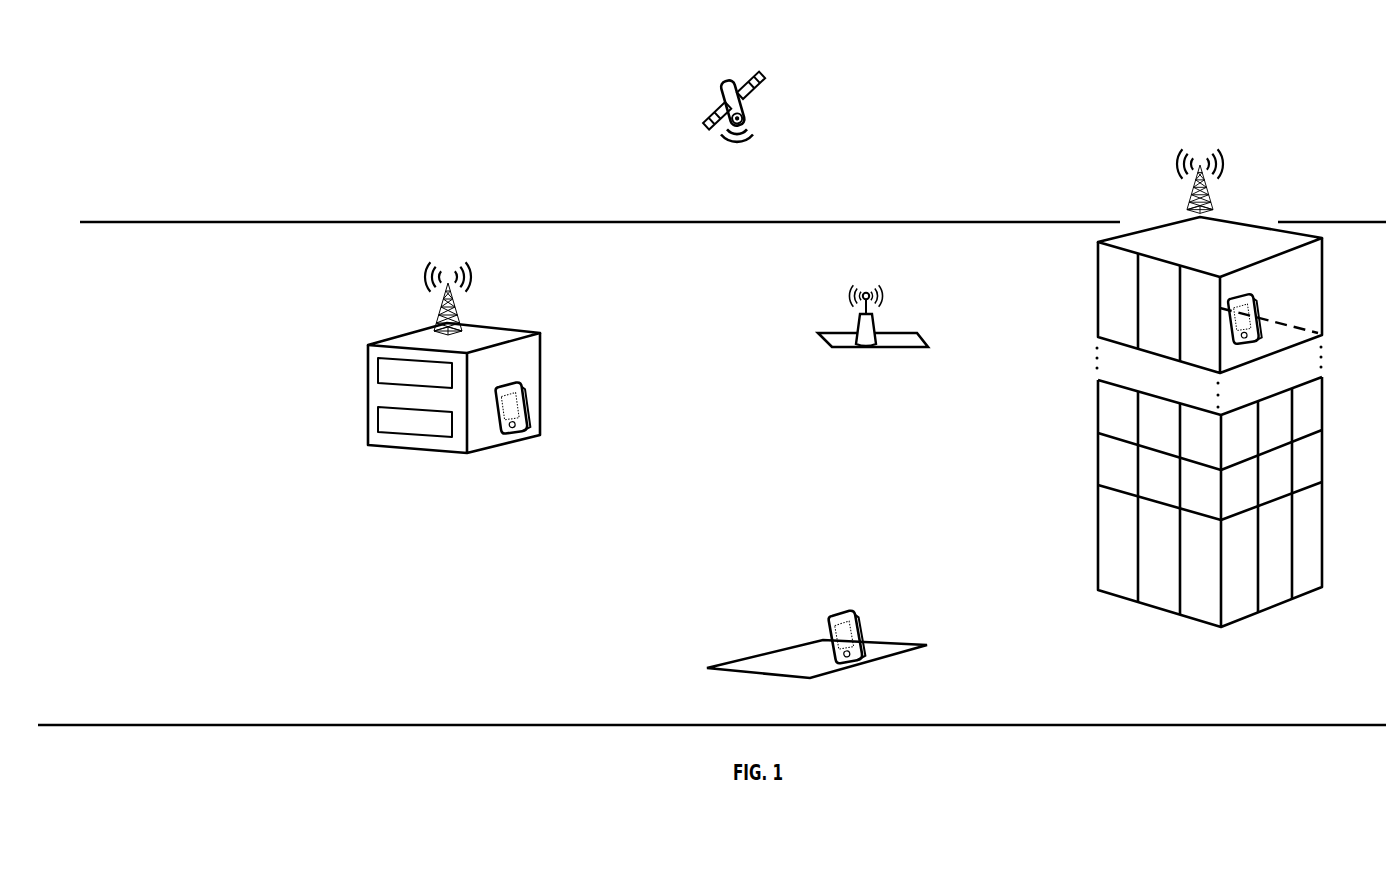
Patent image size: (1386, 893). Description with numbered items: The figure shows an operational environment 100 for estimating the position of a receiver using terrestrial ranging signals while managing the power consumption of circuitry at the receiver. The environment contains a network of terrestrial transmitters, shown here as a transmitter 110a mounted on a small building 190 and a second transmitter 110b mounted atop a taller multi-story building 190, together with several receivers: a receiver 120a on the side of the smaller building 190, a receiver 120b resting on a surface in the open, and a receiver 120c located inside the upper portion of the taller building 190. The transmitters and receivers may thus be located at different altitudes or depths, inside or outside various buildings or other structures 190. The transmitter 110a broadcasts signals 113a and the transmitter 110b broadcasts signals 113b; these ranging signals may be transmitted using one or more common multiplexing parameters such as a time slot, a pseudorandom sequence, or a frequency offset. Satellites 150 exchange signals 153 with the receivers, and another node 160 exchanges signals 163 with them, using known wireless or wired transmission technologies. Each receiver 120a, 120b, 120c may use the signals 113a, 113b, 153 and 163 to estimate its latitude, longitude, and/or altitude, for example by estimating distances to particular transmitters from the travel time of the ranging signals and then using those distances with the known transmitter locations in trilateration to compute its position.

The operational environment 100 is at (107, 94).
The satellites 150 is at (750, 66).
The signals 153 is at (758, 131).
The signals 113b is at (1228, 152).
The terrestrial transmitter 110b is at (1191, 200).
The signals 113a is at (431, 266).
The terrestrial transmitter 110a is at (437, 319).
The building 190 is at (472, 455).
The receiver 120a is at (527, 411).
The receiver 120c is at (1255, 304).
The node 160 is at (856, 330).
The signals 163 is at (842, 298).
The receiver 120b is at (860, 623).